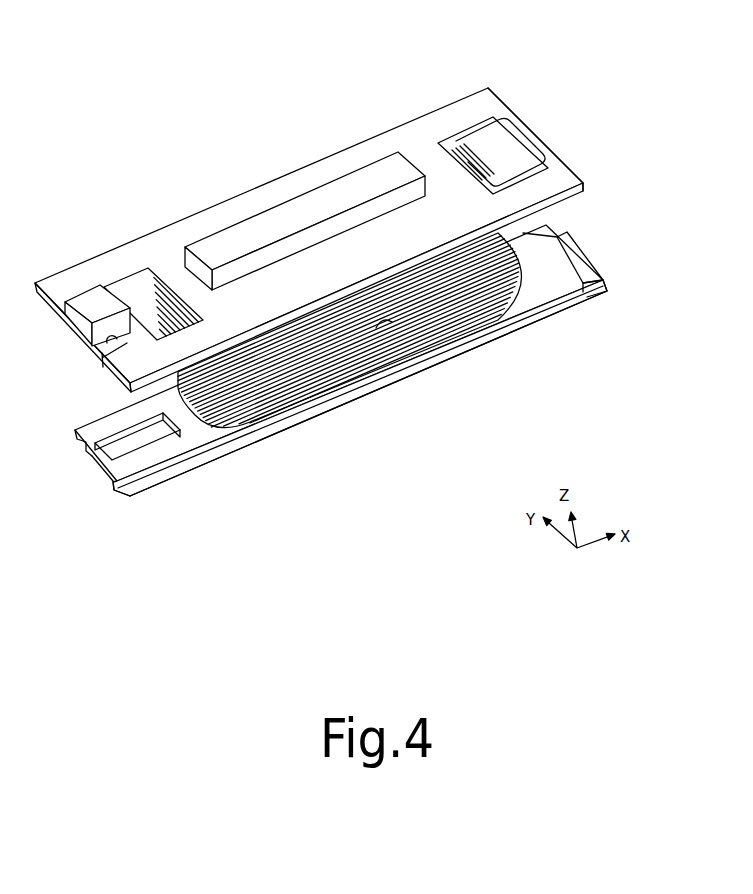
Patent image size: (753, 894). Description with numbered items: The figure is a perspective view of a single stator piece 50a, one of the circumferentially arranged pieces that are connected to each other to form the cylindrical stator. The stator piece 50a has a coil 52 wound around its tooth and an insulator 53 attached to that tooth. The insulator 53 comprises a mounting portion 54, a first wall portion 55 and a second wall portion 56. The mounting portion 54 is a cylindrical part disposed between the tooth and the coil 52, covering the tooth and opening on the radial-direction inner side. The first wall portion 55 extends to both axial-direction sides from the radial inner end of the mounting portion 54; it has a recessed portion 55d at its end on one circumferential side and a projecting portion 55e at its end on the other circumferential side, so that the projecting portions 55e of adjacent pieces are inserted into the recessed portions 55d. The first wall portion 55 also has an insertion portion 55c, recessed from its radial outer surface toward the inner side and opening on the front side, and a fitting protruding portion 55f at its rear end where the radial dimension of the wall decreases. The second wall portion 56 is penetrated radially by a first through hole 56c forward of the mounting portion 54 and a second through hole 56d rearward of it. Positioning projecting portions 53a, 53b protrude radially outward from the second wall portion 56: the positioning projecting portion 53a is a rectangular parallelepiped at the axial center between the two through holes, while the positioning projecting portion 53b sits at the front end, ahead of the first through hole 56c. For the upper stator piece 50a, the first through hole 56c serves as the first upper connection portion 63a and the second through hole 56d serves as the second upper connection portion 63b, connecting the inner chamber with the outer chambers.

The stator piece 50a is at (359, 291).
The coil 52 is at (300, 384).
The insulator 53 is at (591, 189).
The positioning projecting portion 53a is at (277, 218).
The positioning projecting portion 53b is at (92, 300).
The mounting portion 54 is at (388, 330).
The first wall portion 55 is at (122, 500).
The insertion portion 55c is at (103, 452).
The recessed portion 55d is at (77, 441).
The projecting portion 55e is at (137, 500).
The fitting protruding portion 55f is at (603, 279).
The second wall portion 56 is at (413, 130).
The first through hole 56c is at (140, 282).
The second through hole 56d is at (470, 130).
The first upper connection portion 63a is at (140, 318).
The second upper connection portion 63b is at (512, 162).